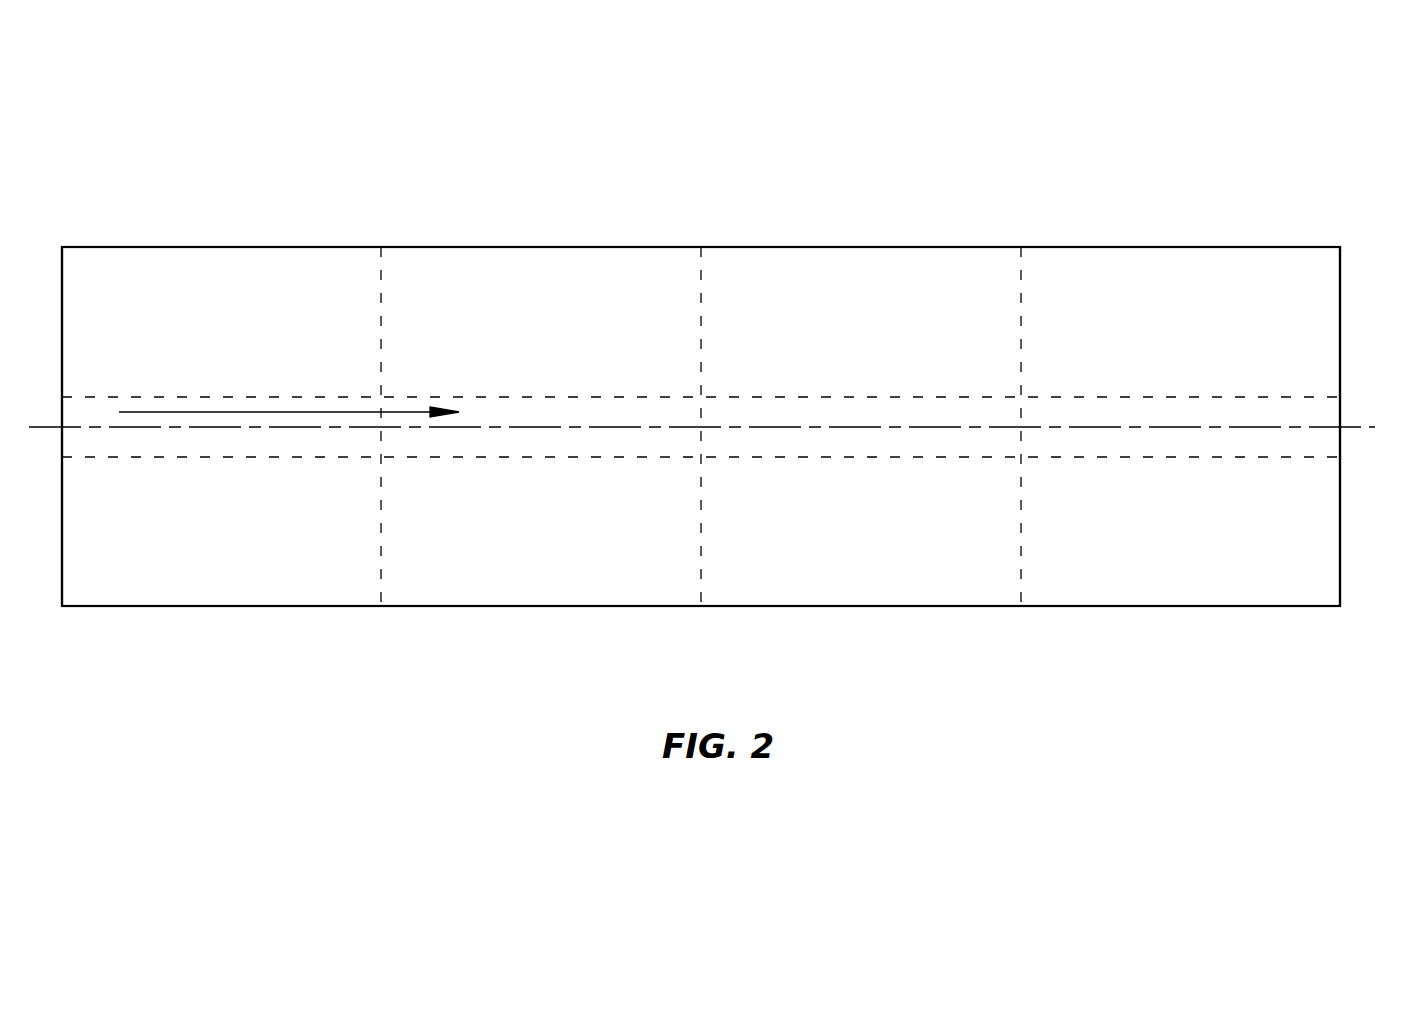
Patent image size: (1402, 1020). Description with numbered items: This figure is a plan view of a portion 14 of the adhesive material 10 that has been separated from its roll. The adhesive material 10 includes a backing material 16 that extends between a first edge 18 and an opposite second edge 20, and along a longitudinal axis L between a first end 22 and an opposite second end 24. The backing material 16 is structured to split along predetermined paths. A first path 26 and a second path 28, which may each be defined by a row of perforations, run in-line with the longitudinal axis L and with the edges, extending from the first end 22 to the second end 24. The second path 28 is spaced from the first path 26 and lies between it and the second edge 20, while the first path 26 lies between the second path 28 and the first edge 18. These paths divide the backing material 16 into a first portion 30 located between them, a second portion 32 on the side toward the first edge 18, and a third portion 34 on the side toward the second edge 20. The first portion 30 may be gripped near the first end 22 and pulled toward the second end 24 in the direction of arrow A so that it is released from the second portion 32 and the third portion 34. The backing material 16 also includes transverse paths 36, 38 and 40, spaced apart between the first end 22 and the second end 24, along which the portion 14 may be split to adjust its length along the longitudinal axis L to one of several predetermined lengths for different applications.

The adhesive material 10 is at (1283, 158).
The portion of the adhesive material 14 is at (1291, 246).
The backing material 16 is at (153, 341).
The first edge 18 is at (107, 247).
The second edge 20 is at (107, 606).
The first end 22 is at (62, 323).
The second end 24 is at (1340, 526).
The first path 26 is at (473, 397).
The second path 28 is at (268, 457).
The first portion 30 is at (541, 412).
The second portion 32 is at (781, 339).
The third portion 34 is at (782, 517).
The path 36 is at (381, 352).
The path 38 is at (701, 353).
The path 40 is at (1021, 352).
The directional arrow A is at (228, 412).
The longitudinal axis L is at (53, 427).